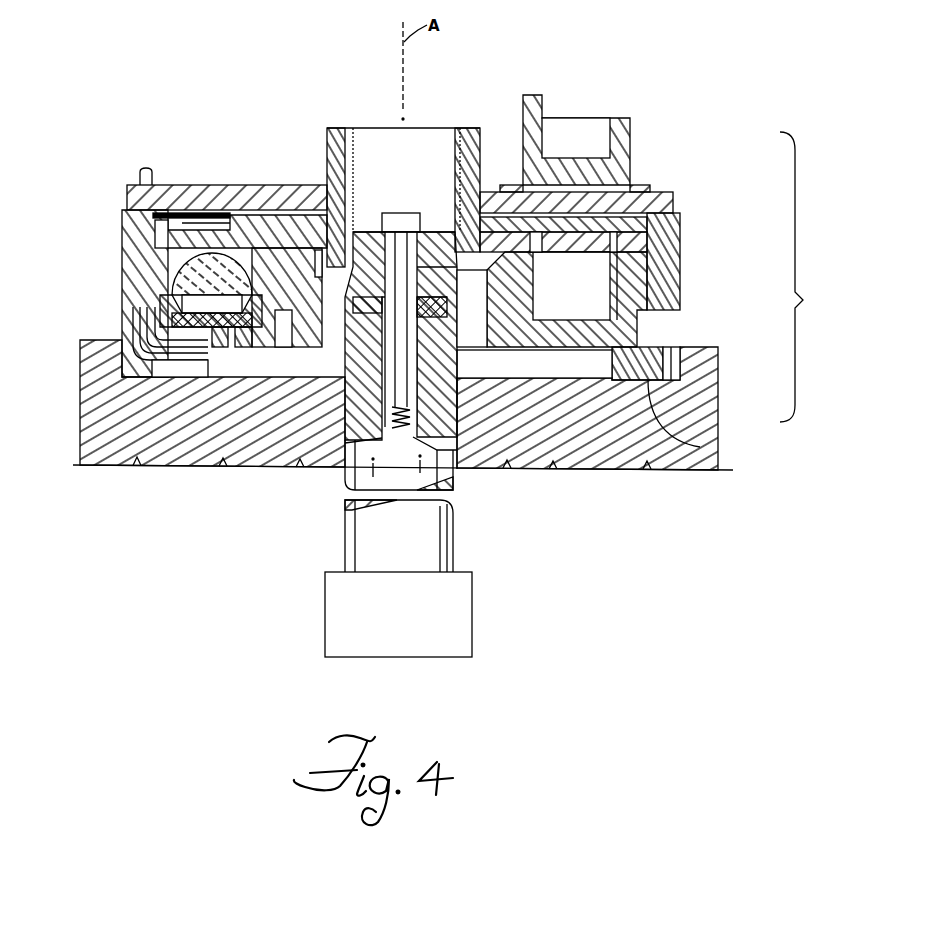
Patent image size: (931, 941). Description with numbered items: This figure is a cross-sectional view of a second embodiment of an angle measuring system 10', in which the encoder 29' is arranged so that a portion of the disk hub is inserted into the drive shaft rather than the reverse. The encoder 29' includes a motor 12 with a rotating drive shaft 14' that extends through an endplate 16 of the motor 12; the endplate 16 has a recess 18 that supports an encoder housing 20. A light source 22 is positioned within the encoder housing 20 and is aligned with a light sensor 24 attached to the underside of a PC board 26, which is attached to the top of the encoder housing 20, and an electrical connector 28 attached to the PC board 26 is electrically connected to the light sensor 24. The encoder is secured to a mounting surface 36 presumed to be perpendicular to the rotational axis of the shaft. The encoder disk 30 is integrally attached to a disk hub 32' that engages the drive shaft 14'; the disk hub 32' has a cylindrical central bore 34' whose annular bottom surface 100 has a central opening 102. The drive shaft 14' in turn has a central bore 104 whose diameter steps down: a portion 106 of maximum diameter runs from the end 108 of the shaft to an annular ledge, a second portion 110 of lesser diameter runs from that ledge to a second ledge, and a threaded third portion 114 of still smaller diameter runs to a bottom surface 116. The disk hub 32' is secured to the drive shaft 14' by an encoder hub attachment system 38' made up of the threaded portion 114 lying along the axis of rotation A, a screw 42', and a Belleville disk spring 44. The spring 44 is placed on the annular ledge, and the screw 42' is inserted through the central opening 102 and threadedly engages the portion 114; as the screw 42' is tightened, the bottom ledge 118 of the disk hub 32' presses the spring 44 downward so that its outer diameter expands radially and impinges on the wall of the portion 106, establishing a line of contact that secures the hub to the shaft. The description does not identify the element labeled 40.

The sensor assembly 10' is at (870, 202).
The motor 12 is at (473, 613).
The drive shaft 14' is at (365, 472).
The endplate 16 is at (170, 459).
The recess 18 is at (673, 343).
The encoder housing 20 is at (122, 313).
The light source 22 is at (125, 268).
The light sensor 24 is at (203, 212).
The PC board 26 is at (125, 191).
The electrical connector 28 is at (630, 143).
The encoder 29' is at (862, 255).
The encoder disk 30 is at (253, 185).
The disk hub 32' is at (394, 145).
The central bore 34' is at (470, 154).
The mounting surface 36 is at (720, 437).
The encoder hub attachment system 38' is at (810, 277).
The cavity 40 is at (456, 331).
The screw 42' is at (401, 293).
The Belleville disk spring 44 is at (475, 186).
The bottom surface 100 is at (437, 233).
The central opening 102 is at (372, 210).
The central bore 104 is at (450, 303).
The portion 106 is at (293, 185).
The end 108 is at (447, 293).
The second portion 110 is at (456, 358).
The third portion 114 is at (470, 453).
The bottom surface 116 is at (560, 467).
The bottom ledge 118 is at (452, 287).